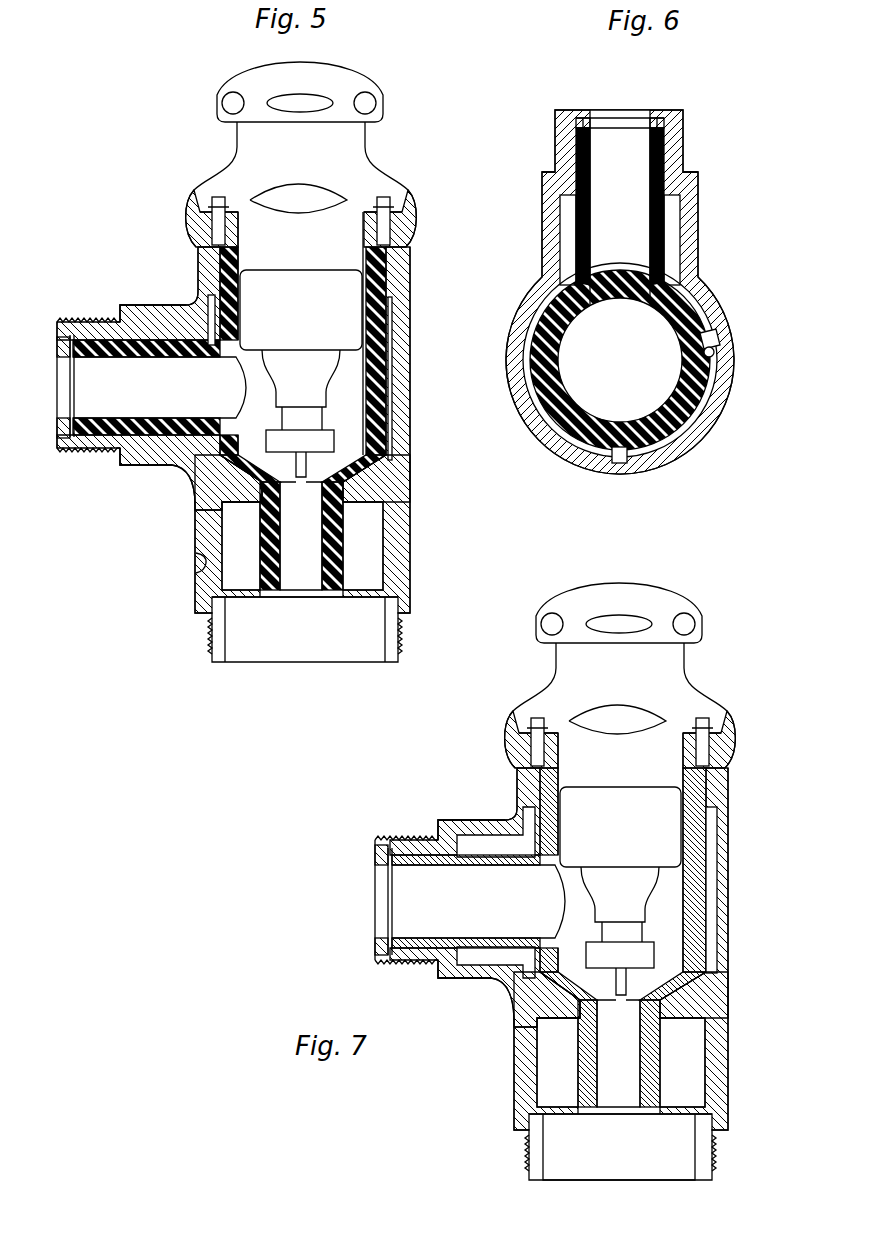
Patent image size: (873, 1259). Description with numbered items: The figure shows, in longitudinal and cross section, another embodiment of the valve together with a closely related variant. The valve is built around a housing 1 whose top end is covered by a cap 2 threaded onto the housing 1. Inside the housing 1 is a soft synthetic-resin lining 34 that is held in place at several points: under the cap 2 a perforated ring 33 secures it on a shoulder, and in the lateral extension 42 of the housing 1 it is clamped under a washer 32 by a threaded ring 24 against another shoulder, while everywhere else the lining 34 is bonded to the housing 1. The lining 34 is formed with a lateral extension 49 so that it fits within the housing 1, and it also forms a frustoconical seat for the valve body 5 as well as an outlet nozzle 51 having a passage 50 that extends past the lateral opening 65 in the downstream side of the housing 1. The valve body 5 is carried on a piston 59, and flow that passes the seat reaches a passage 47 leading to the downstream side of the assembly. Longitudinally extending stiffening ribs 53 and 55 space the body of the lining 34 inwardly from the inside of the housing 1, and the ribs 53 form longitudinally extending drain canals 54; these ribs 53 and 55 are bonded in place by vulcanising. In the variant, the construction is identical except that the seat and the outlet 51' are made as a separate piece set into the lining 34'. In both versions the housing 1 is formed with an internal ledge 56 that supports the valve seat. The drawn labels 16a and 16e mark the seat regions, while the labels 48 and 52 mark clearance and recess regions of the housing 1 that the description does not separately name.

In FIG. 5, the housing 1 is at (410, 395).
In FIG. 6, the housing 1 is at (712, 308).
In FIG. 7, the housing 1 is at (729, 900).
In FIG. 5, the cap 2 is at (362, 168).
In FIG. 7, the cap 2 is at (683, 683).
In FIG. 5, the valve body 5 is at (395, 478).
In FIG. 7, the valve body 5 is at (700, 1003).
In FIG. 5, the seat shoulder 16a is at (230, 488).
In FIG. 7, the seat shoulder 16e is at (565, 978).
In FIG. 5, the threaded ring 24 is at (60, 435).
In FIG. 6, the threaded ring 24 is at (662, 117).
In FIG. 7, the threaded ring 24 is at (385, 937).
In FIG. 5, the washer 32 is at (72, 333).
In FIG. 6, the washer 32 is at (583, 117).
In FIG. 7, the washer 32 is at (390, 846).
In FIG. 5, the perforated ring 33 is at (404, 235).
In FIG. 5, the lining 34 is at (344, 347).
In FIG. 6, the lining 34 is at (653, 360).
In FIG. 7, the lining 34' is at (666, 866).
In FIG. 5, the extension 42 is at (170, 470).
In FIG. 6, the extension 42 is at (700, 232).
In FIG. 7, the extension 42 is at (468, 998).
In FIG. 5, the passage 47 is at (210, 216).
In FIG. 7, the passage 47 is at (714, 745).
In FIG. 5, the clearance gap 48 is at (391, 337).
In FIG. 6, the clearance gap 48 is at (680, 432).
In FIG. 7, the clearance gap 48 is at (712, 940).
In FIG. 5, the lateral extension 49 is at (165, 338).
In FIG. 6, the lateral extension 49 is at (668, 172).
In FIG. 7, the lateral extension 49 is at (452, 866).
In FIG. 5, the passage 50 is at (298, 556).
In FIG. 7, the passage 50 is at (635, 1047).
In FIG. 5, the outlet nozzle 51 is at (244, 536).
In FIG. 7, the outlet 51' is at (562, 1055).
In FIG. 7, the flange recess 52 is at (490, 838).
In FIG. 6, the stiffening ribs 53 is at (722, 340).
In FIG. 6, the drain canals 54 is at (715, 354).
In FIG. 6, the stiffening ribs 55 is at (619, 466).
In FIG. 5, the internal ledge 56 is at (375, 498).
In FIG. 7, the internal ledge 56 is at (560, 1025).
In FIG. 5, the piston 59 is at (312, 424).
In FIG. 7, the piston 59 is at (655, 952).
In FIG. 5, the lateral opening 65 is at (197, 568).